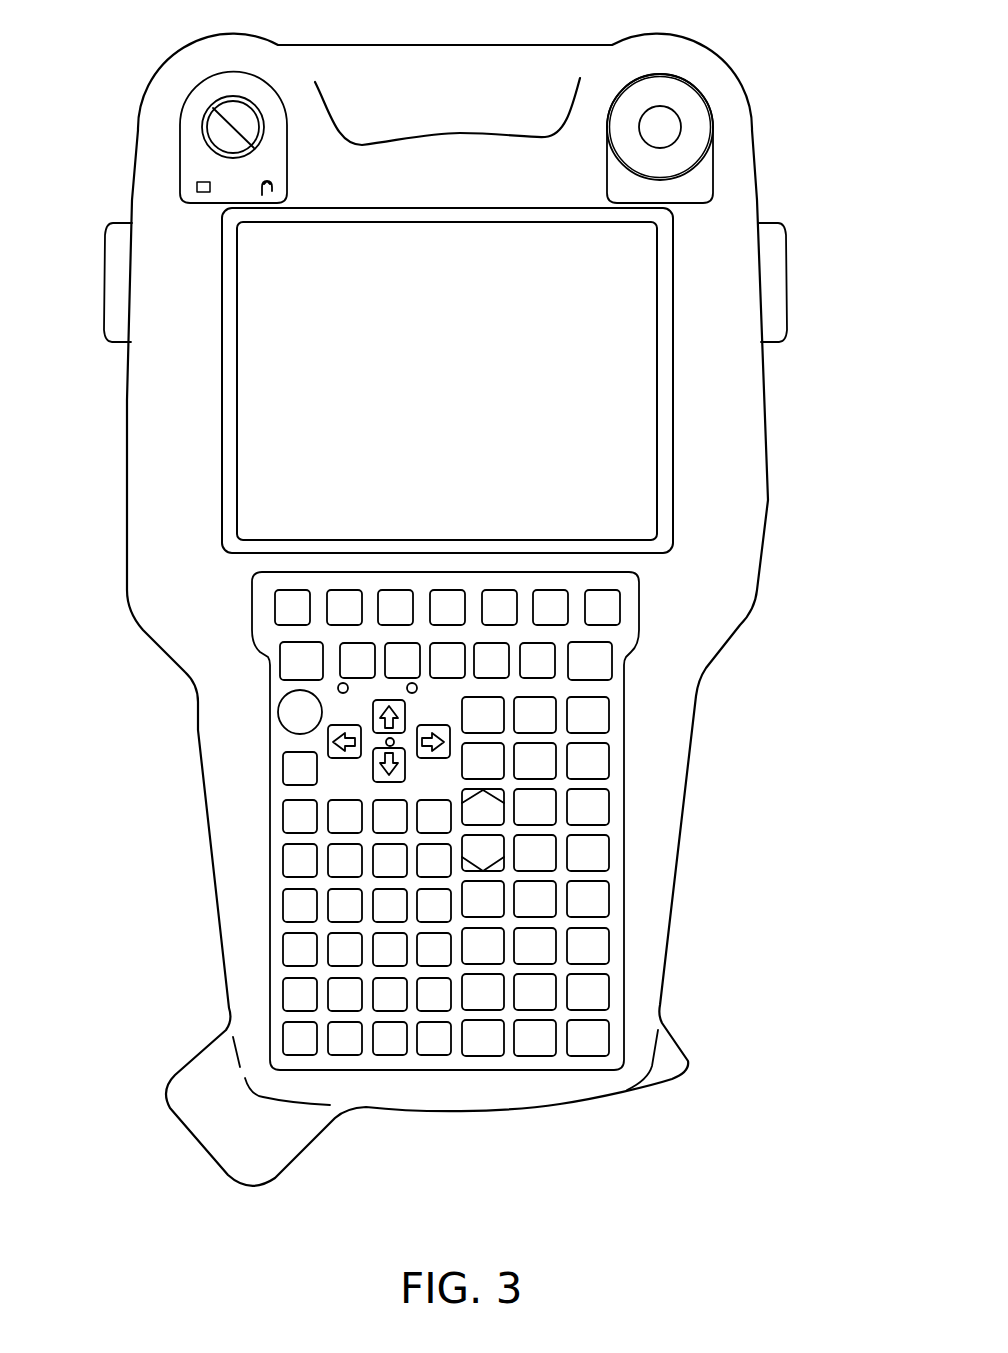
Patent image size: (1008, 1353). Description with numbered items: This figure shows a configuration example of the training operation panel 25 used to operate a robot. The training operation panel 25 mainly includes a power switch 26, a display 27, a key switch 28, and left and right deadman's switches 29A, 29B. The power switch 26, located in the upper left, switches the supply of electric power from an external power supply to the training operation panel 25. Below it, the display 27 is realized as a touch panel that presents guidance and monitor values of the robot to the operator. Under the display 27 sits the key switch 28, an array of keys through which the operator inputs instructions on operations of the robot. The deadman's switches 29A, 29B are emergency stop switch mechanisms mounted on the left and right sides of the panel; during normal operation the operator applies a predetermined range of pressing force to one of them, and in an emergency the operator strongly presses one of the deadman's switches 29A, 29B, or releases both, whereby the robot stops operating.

The training operation panel 25 is at (783, 47).
The power switch 26 is at (185, 108).
The display 27 is at (673, 430).
The key switch 28 is at (624, 777).
The deadman's switch 29A is at (113, 343).
The deadman's switch 29B is at (783, 338).